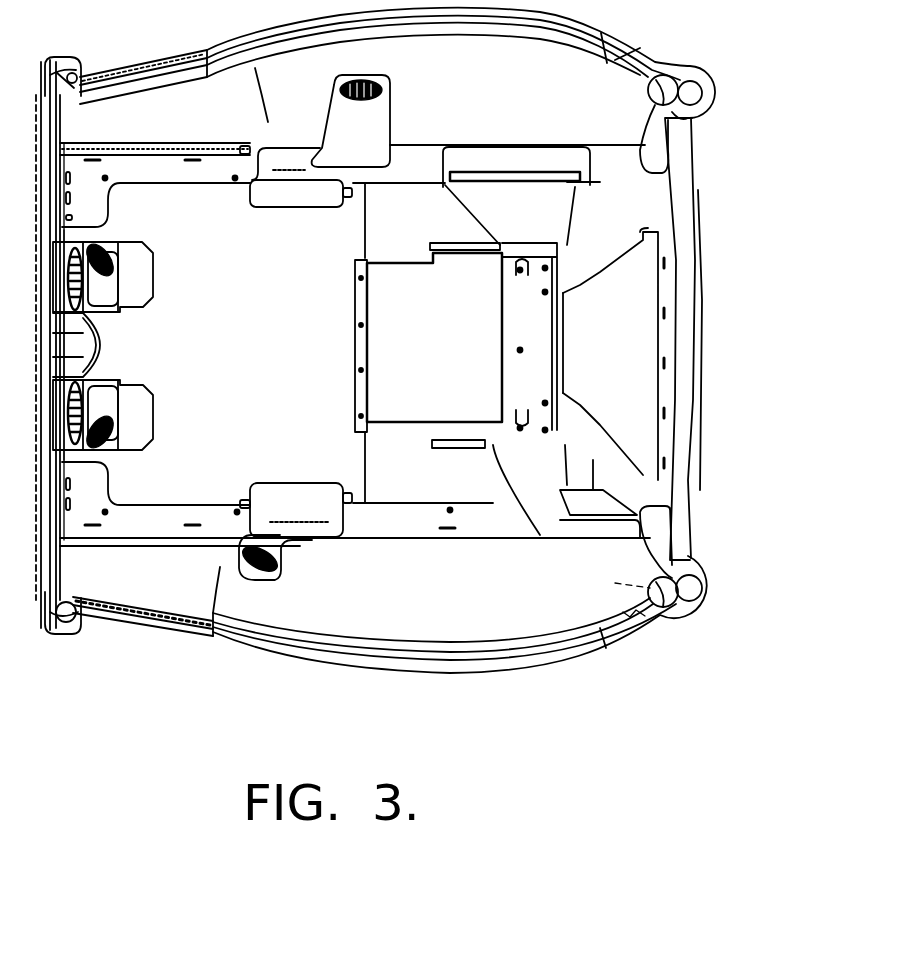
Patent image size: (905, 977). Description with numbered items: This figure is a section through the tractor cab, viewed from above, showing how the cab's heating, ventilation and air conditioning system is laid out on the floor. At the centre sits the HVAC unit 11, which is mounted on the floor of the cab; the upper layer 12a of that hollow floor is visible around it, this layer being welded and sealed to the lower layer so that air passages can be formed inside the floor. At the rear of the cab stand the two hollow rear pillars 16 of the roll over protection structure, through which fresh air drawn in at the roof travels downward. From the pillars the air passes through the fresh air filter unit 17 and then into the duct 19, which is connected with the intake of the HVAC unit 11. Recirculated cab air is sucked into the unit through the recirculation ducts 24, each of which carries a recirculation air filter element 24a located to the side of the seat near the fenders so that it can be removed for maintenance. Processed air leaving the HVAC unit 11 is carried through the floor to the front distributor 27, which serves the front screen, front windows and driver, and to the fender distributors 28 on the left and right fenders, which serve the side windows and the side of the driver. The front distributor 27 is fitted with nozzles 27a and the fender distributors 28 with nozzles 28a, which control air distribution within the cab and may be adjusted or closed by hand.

The HVAC unit 11 is at (456, 345).
The upper layer 12a is at (171, 345).
The hollow rear pillar 16 is at (680, 100).
The fresh air filter unit 17 is at (668, 343).
The duct 19 is at (613, 354).
The recirculation duct 24 is at (540, 167).
The recirculation air filter element 24a is at (565, 180).
The front distributor 27 is at (135, 270).
The nozzle 27a is at (100, 248).
The fender distributor 28 is at (333, 155).
The nozzle 28a is at (388, 80).